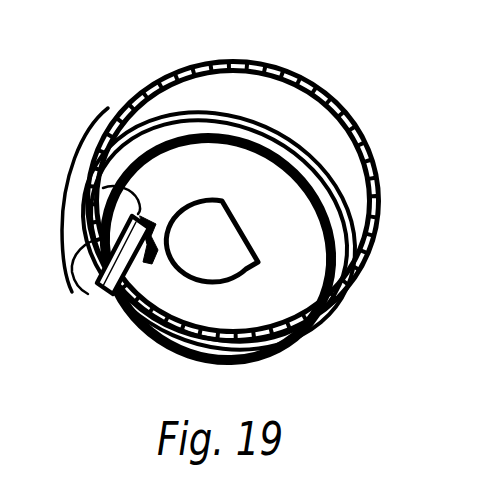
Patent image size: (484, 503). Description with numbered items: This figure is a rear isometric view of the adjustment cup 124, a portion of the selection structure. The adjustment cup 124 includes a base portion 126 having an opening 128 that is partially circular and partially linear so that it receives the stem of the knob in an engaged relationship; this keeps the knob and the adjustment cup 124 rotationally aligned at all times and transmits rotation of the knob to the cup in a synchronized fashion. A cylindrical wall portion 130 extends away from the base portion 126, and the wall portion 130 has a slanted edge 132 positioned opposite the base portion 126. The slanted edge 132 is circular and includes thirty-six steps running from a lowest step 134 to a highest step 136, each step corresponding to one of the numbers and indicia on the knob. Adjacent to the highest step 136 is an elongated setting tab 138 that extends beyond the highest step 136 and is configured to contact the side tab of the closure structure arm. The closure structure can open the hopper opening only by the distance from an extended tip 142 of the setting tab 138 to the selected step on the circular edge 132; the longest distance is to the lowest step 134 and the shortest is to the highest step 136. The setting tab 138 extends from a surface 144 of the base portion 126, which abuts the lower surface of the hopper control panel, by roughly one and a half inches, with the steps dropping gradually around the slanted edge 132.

The adjustment cup 124 is at (352, 113).
The base portion 126 is at (289, 294).
The opening 128 is at (216, 243).
The cylindrical wall portion 130 is at (181, 93).
The slanted edge 132 is at (375, 180).
The lowest step 134 is at (118, 318).
The highest step 136 is at (78, 268).
The setting tab 138 is at (98, 203).
The extended tip 142 is at (91, 158).
The surface 144 is at (290, 239).